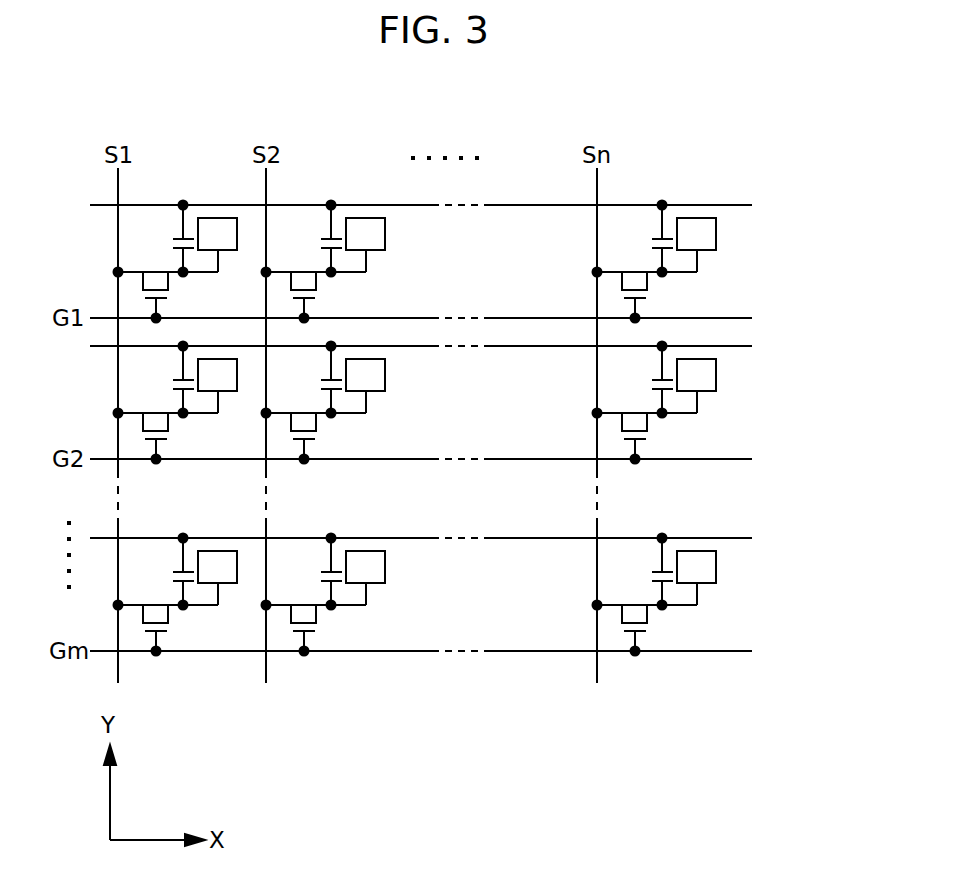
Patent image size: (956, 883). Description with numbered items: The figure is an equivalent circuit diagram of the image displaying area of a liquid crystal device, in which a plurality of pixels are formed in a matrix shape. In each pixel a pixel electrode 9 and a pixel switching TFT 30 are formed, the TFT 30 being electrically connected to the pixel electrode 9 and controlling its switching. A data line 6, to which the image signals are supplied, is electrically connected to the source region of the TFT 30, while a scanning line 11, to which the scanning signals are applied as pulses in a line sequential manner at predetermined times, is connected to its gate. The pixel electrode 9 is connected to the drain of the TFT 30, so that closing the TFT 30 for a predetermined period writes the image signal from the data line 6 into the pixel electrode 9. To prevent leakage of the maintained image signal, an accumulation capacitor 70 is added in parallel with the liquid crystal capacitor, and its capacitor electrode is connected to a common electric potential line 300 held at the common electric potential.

The data line 6 is at (637, 164).
The scanning line 11 is at (800, 651).
The common electric potential line 300 is at (778, 555).
The accumulation capacitor 70 is at (171, 243).
The pixel electrode 9 is at (742, 598).
The pixel switching TFT 30 is at (137, 288).